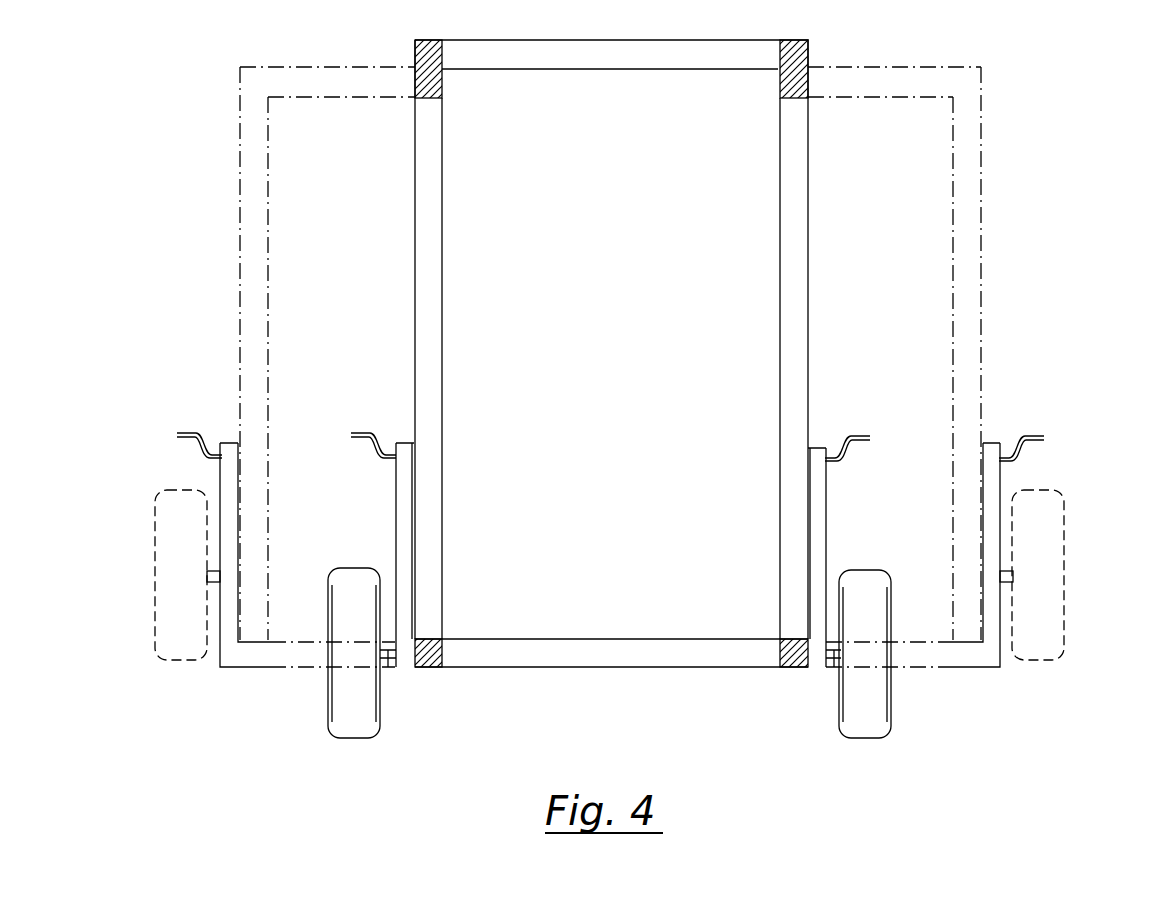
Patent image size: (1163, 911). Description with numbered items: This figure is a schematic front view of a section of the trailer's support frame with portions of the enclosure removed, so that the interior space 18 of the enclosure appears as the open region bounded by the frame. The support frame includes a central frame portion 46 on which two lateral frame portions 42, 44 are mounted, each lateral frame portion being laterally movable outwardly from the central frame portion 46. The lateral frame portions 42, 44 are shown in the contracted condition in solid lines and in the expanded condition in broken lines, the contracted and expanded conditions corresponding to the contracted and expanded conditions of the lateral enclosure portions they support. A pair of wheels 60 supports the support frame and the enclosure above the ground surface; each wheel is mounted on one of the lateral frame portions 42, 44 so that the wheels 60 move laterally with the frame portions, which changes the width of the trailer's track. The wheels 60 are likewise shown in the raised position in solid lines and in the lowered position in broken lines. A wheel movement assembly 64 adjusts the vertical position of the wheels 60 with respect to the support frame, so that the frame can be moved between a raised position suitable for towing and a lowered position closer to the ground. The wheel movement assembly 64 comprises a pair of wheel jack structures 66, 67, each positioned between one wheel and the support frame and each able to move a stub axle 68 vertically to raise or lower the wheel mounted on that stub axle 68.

The interior space 18 is at (640, 112).
The lateral frame portion 42 is at (275, 668).
The lateral frame portion 44 is at (943, 668).
The central frame portion 46 is at (608, 650).
The wheels 60 is at (165, 618).
The wheel movement assembly 64 is at (388, 426).
The wheel jack structure 66 is at (405, 517).
The wheel jack structure 67 is at (815, 518).
The stub axle 68 is at (387, 660).